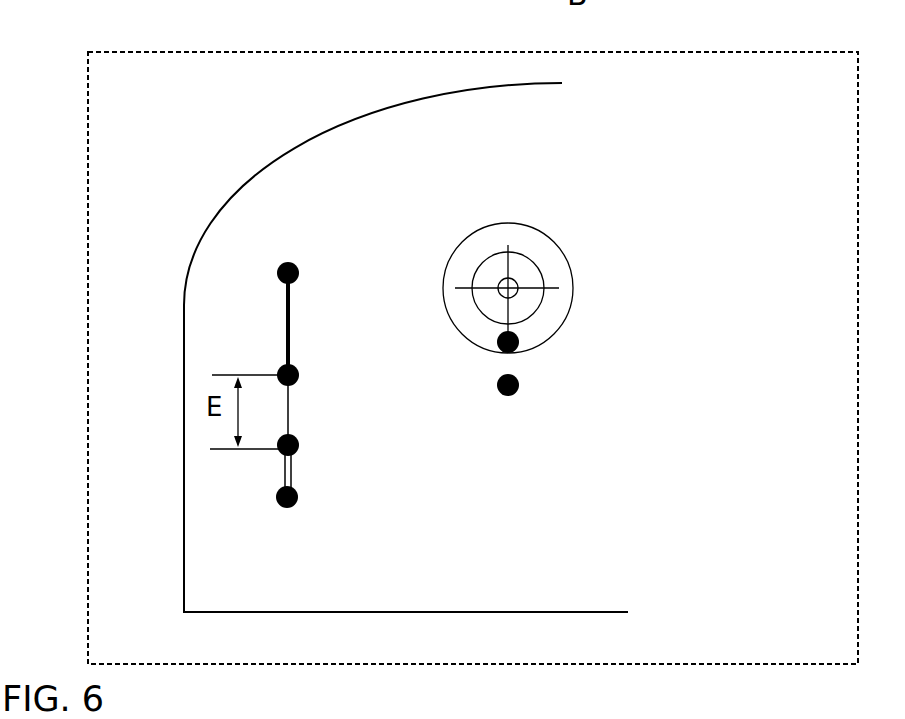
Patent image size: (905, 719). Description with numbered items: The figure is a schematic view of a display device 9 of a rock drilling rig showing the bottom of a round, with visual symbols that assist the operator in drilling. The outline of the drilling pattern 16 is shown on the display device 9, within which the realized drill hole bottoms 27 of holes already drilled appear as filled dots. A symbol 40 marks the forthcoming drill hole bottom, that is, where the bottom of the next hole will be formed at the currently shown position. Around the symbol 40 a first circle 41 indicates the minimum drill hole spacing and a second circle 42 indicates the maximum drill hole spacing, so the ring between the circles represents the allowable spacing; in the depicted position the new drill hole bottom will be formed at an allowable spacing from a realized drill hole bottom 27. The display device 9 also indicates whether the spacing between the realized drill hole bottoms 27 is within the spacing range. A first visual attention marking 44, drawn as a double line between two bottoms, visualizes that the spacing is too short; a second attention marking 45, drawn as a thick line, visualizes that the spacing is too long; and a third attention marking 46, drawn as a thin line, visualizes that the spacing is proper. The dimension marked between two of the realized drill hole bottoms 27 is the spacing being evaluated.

The display device 9 is at (735, 51).
The drilling pattern 16 is at (207, 193).
The realized drill hole bottom 27 is at (299, 271).
The symbol of a forthcoming drill hole bottom 40 is at (514, 279).
The first circle 41 is at (542, 305).
The second circle 42 is at (562, 332).
The first visual attention marking 44 is at (298, 473).
The second attention marking 45 is at (298, 330).
The third attention marking 46 is at (298, 419).